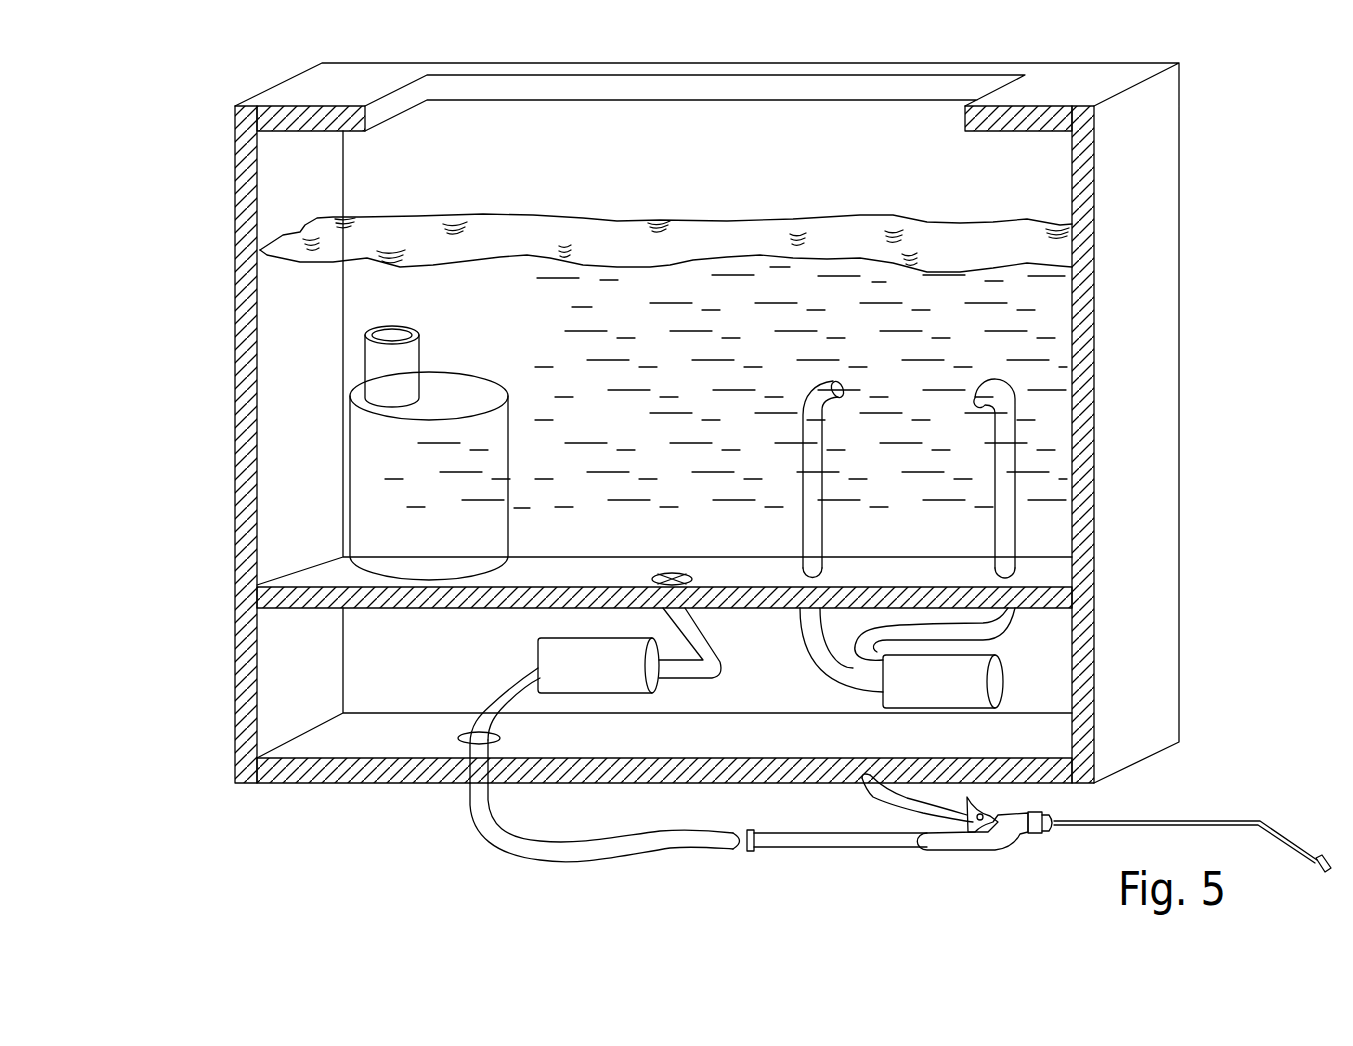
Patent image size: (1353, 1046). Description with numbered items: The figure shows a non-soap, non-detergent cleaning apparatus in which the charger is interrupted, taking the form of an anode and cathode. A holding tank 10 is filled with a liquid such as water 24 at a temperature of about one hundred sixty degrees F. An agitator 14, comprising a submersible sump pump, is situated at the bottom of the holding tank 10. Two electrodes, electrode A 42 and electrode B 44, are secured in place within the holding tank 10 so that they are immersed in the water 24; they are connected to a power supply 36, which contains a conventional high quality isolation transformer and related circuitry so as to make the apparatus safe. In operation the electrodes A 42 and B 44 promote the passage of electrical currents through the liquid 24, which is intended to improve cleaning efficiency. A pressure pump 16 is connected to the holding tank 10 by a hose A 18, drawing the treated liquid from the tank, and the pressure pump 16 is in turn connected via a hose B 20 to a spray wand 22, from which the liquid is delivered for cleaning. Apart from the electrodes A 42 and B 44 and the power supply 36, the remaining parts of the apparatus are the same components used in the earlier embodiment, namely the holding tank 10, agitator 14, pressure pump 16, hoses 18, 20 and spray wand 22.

The holding tank 10 is at (1122, 378).
The agitator 14 is at (378, 476).
The pressure pump 16 is at (614, 683).
The hose A 18 is at (723, 667).
The hose B 20 is at (493, 823).
The spray wand 22 is at (740, 850).
The water 24 is at (1050, 287).
The power supply 36 is at (956, 698).
The electrode A 42 is at (841, 381).
The electrode B 44 is at (1005, 452).